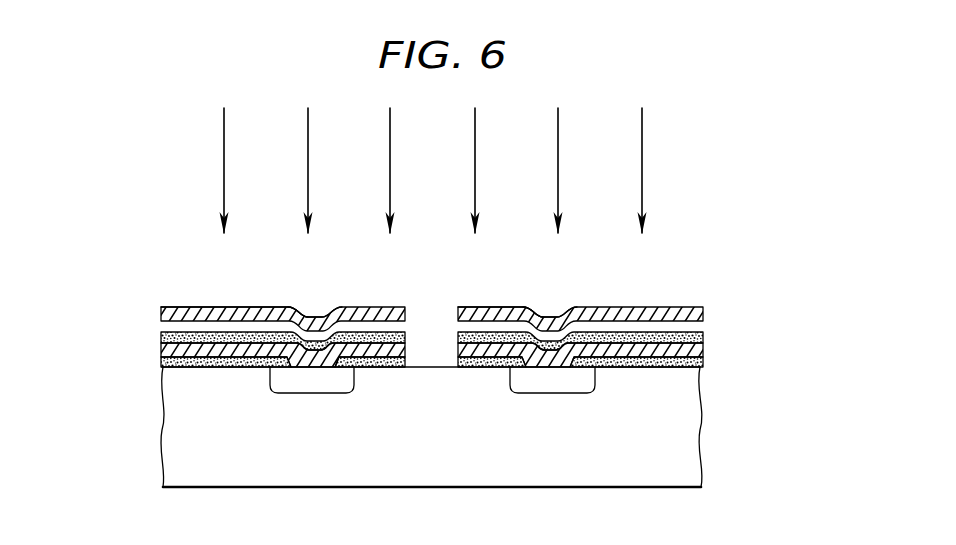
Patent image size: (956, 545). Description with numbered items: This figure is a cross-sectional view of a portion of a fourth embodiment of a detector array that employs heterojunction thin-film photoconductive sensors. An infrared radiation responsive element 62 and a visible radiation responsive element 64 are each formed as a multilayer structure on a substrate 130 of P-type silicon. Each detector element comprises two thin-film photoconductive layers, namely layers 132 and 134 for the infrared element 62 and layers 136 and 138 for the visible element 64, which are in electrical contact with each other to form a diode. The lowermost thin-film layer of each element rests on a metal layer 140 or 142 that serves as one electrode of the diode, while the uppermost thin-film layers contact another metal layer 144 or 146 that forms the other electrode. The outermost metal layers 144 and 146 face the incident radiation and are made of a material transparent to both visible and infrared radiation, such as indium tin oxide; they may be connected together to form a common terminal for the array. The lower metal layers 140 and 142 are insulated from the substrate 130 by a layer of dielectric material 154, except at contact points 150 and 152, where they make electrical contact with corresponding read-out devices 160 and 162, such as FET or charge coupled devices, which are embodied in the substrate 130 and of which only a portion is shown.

The substrate 130 is at (700, 455).
The thin-film photoconductive layer 132 is at (705, 318).
The thin-film photoconductive layer 134 is at (705, 336).
The thin-film photoconductive layer 136 is at (161, 316).
The thin-film photoconductive layer 138 is at (161, 338).
The metal layer 140 is at (705, 350).
The metal layer 142 is at (161, 349).
The metal layer 144 is at (480, 308).
The metal layer 146 is at (210, 307).
The contact point 150 is at (572, 370).
The contact point 152 is at (327, 370).
The layer of dielectric material 154 is at (161, 362).
The read-out device 160 is at (543, 393).
The read-out device 162 is at (313, 393).
The infrared radiation responsive element 62 is at (553, 306).
The visible radiation responsive element 64 is at (318, 299).